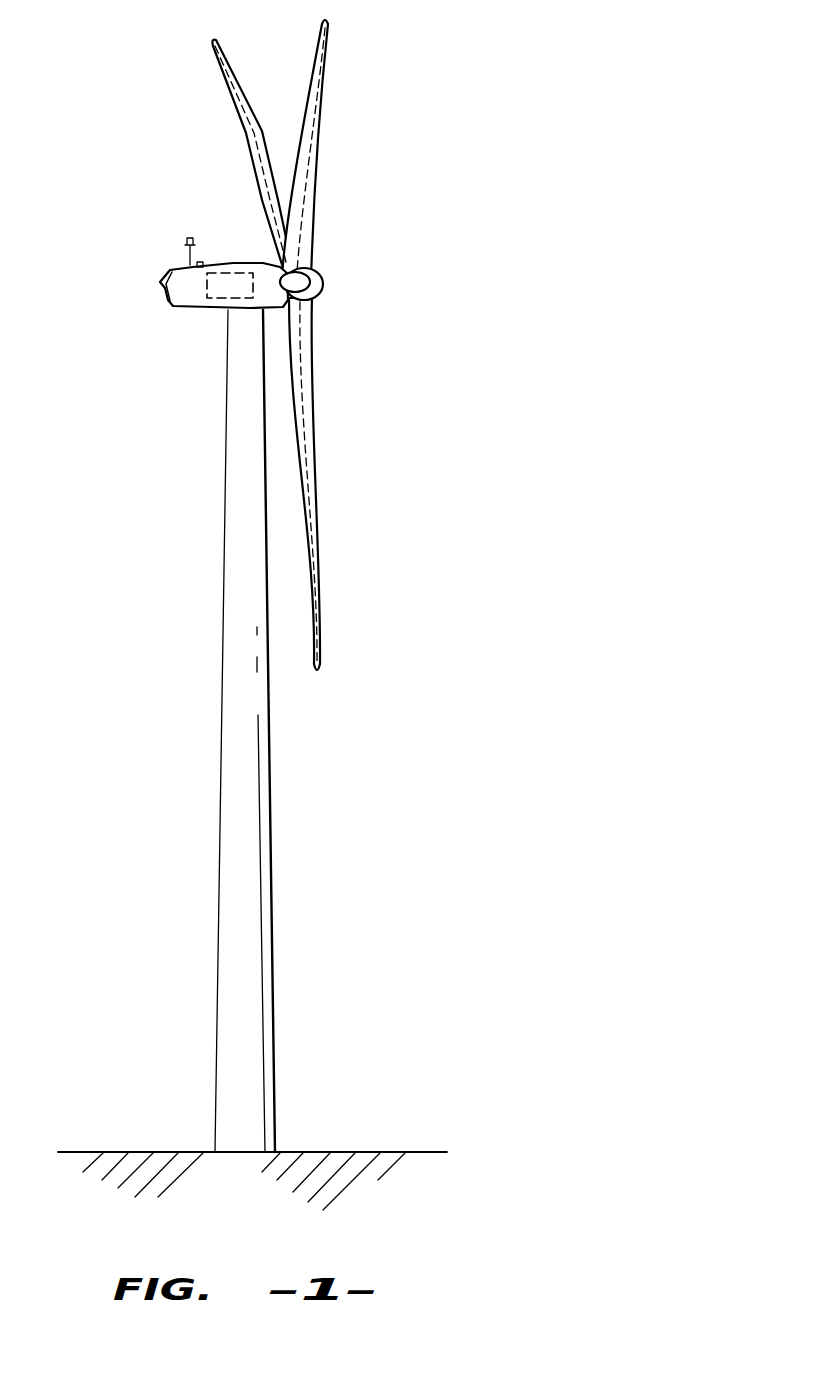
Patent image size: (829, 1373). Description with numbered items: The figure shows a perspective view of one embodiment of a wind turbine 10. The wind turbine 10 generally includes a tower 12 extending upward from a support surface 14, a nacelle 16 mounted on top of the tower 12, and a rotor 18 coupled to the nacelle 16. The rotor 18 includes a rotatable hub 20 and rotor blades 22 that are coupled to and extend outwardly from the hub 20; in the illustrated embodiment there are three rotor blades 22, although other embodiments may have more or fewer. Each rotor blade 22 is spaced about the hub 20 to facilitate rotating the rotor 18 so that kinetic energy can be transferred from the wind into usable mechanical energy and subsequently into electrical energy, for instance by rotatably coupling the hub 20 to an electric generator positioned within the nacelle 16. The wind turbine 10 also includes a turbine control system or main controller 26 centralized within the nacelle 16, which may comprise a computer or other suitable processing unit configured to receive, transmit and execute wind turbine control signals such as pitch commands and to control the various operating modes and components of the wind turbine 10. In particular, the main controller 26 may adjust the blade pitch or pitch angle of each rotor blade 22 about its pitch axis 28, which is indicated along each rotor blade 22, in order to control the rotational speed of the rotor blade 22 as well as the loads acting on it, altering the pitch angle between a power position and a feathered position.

The wind turbine 10 is at (428, 98).
The tower 12 is at (232, 847).
The support surface 14 is at (142, 1152).
The nacelle 16 is at (200, 312).
The rotor 18 is at (329, 258).
The rotatable hub 20 is at (317, 290).
The rotor blade 22 is at (317, 62).
The main controller 26 is at (233, 272).
The pitch axis 28 is at (250, 165).